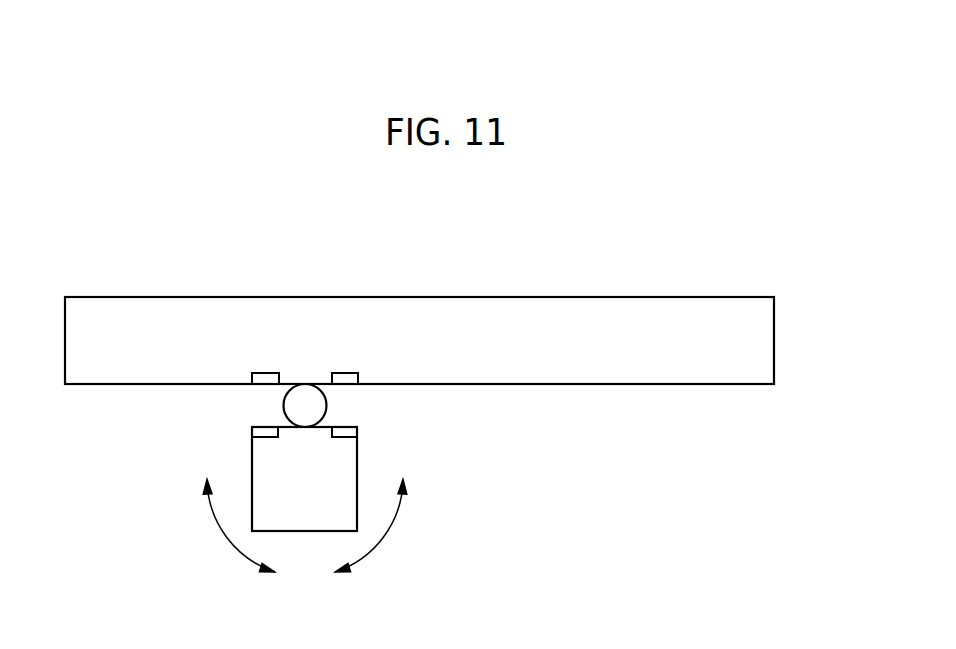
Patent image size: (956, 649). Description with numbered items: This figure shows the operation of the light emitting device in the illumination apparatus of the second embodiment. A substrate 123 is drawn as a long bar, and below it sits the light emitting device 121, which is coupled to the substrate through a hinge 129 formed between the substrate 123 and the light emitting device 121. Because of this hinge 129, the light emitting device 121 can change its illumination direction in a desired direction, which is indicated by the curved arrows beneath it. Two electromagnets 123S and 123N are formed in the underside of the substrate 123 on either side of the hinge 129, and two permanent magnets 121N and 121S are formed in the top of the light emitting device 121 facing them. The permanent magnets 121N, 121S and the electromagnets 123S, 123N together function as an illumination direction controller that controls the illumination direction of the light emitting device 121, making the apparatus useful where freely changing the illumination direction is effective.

The substrate 123 is at (767, 345).
The electromagnet 123S is at (263, 375).
The electromagnet 123N is at (342, 375).
The hinge 129 is at (322, 404).
The light emitting device 121 is at (347, 468).
The permanent magnet 121N is at (265, 431).
The permanent magnet 121S is at (350, 431).